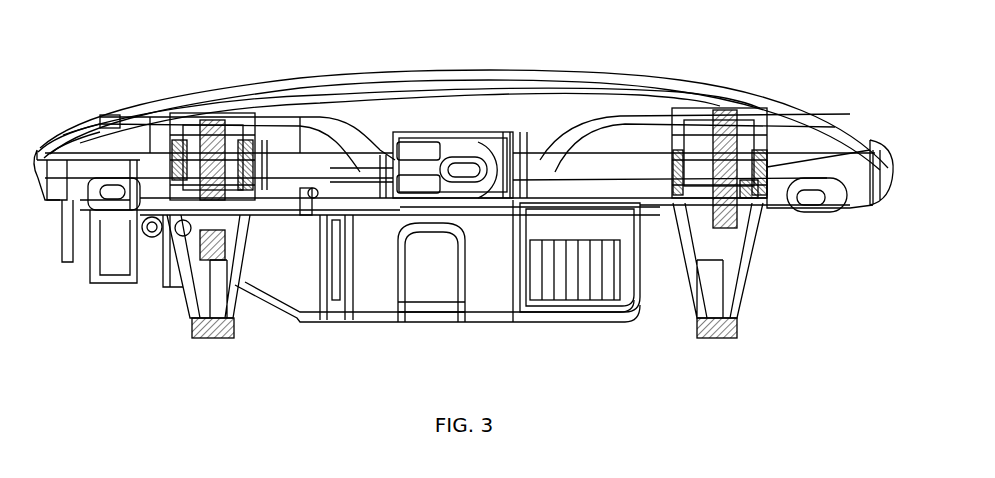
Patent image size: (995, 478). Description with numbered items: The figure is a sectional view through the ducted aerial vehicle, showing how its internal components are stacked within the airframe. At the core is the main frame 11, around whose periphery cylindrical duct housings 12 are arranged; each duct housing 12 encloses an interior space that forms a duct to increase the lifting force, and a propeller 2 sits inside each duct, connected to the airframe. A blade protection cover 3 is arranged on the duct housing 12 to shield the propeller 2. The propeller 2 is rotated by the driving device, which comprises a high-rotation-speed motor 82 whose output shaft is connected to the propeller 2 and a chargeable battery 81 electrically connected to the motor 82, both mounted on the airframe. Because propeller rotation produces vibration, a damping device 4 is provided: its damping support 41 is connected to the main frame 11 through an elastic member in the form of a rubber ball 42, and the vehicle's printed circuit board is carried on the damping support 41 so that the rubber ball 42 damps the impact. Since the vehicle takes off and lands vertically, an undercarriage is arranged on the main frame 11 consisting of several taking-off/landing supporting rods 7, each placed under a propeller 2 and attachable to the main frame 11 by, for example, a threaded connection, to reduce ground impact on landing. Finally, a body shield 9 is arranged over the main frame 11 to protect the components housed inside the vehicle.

The propeller 2 is at (298, 143).
The blade protection cover 3 is at (42, 142).
The damping device 4 is at (502, 170).
The taking-off/landing supporting rod 7 is at (198, 282).
The body shield 9 is at (368, 85).
The main frame 11 is at (368, 280).
The duct housing 12 is at (863, 170).
The damping support 41 is at (503, 145).
The rubber ball 42 is at (455, 175).
The battery 81 is at (627, 267).
The motor 82 is at (703, 170).